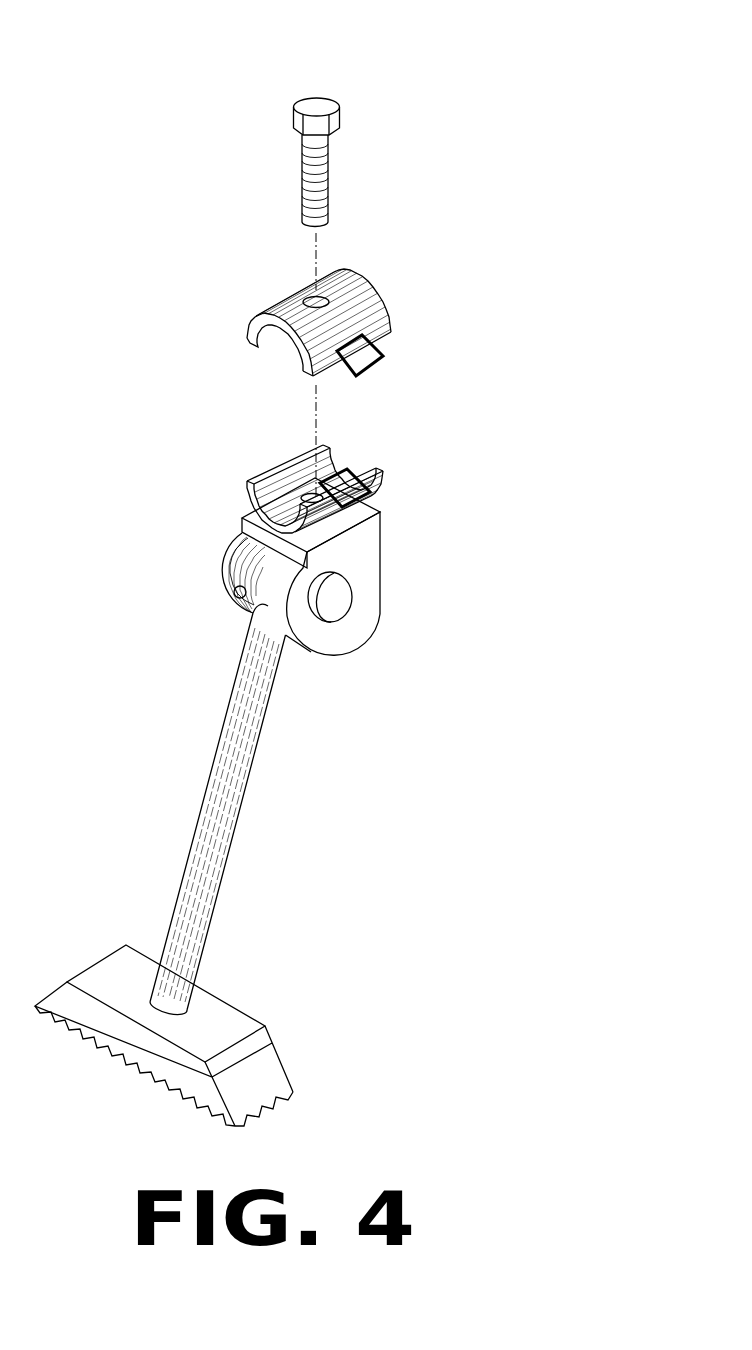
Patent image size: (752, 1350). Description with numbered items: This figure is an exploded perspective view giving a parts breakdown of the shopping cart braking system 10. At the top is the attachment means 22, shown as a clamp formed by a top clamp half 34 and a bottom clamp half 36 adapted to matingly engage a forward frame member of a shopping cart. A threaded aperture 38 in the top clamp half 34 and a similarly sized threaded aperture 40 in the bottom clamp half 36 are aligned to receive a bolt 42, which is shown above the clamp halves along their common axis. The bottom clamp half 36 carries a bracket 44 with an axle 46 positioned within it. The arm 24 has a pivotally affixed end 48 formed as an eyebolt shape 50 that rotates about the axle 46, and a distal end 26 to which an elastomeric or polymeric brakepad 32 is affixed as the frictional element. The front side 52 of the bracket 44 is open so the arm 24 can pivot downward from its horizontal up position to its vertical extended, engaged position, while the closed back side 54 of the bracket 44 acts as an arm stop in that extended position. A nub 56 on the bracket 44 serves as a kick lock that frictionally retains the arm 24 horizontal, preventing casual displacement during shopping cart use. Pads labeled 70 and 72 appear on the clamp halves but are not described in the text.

The shopping cart braking system 10 is at (582, 115).
The attachment means 22 is at (445, 325).
The arm 24 is at (233, 743).
The distal end of arm 26 is at (210, 985).
The brakepad 32 is at (272, 1060).
The top clamp half 34 is at (300, 292).
The bottom clamp half 36 is at (329, 461).
The threaded aperture in top clamp half 38 is at (318, 300).
The threaded aperture in bottom clamp half 40 is at (305, 494).
The bolt 42 is at (303, 180).
The bracket 44 is at (315, 604).
The axle 46 is at (330, 604).
The pivotally affixed end of arm 48 is at (265, 573).
The eyebolt shape at pivotally affixed end of arm 50 is at (282, 650).
The open front side of bracket 52 is at (267, 606).
The closed back side of bracket 54 is at (382, 524).
The nub 56 is at (234, 591).
The magnet pad 70 is at (383, 357).
The magnet pad 72 is at (347, 470).